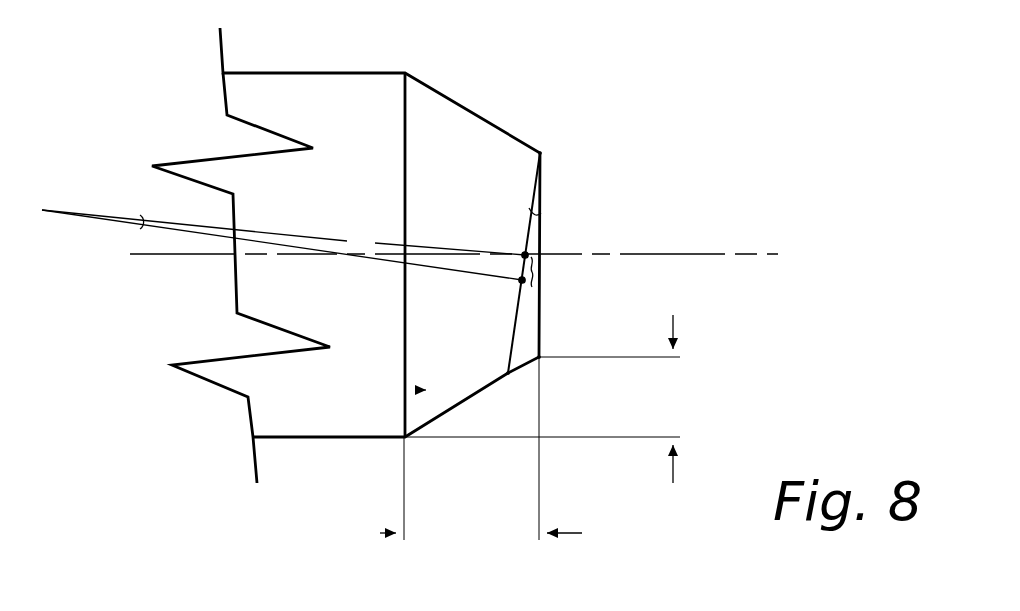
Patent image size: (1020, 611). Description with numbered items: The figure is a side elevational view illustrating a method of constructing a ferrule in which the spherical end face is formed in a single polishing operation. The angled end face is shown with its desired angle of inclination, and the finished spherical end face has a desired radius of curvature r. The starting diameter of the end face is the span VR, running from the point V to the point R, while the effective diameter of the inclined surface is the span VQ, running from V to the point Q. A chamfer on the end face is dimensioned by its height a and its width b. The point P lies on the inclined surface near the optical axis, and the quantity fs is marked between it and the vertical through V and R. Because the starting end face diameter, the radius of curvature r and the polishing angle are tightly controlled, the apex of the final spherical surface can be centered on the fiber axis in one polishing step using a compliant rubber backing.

The radius of curvature r is at (442, 239).
The end face point V is at (539, 141).
The point on prism exit surface on optical axis P is at (520, 250).
The sagittal focal distance offset fs is at (541, 271).
The end face point Q is at (514, 386).
The end face point R is at (547, 368).
The chamfer height a is at (481, 450).
The chamfer width b is at (542, 399).